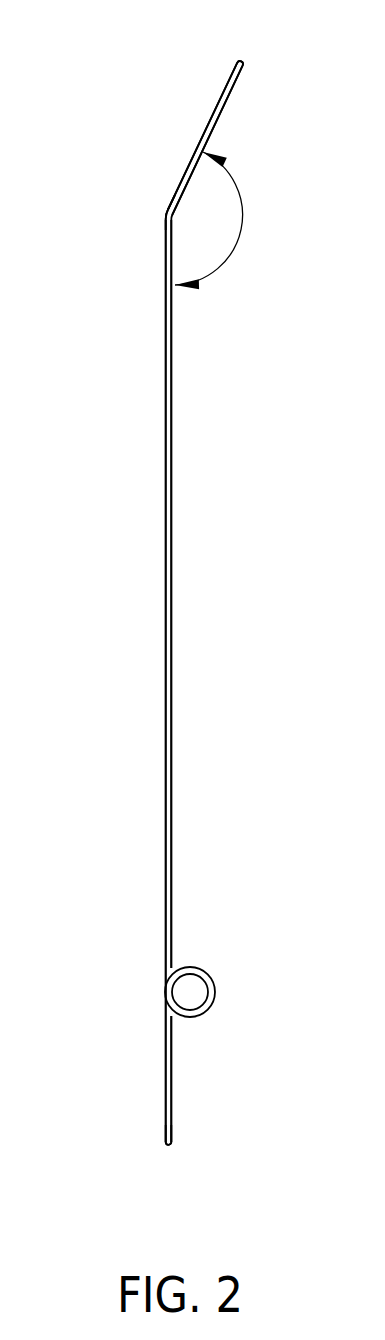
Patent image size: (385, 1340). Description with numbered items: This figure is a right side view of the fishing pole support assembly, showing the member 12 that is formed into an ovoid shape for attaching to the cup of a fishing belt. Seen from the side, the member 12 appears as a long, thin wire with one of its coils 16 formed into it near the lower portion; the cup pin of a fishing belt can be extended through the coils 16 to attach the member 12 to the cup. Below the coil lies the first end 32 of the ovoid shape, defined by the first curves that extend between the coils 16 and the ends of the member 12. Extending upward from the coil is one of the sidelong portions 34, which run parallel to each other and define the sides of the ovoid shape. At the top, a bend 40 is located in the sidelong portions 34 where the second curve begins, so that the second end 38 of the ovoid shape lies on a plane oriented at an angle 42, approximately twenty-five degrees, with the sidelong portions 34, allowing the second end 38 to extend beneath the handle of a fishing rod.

The member 12 is at (130, 330).
The coils 16 is at (213, 988).
The first end 32 is at (167, 1150).
The sidelong portions 34 is at (130, 603).
The second end 38 is at (240, 57).
The bend 40 is at (160, 208).
The angle 42 is at (270, 220).